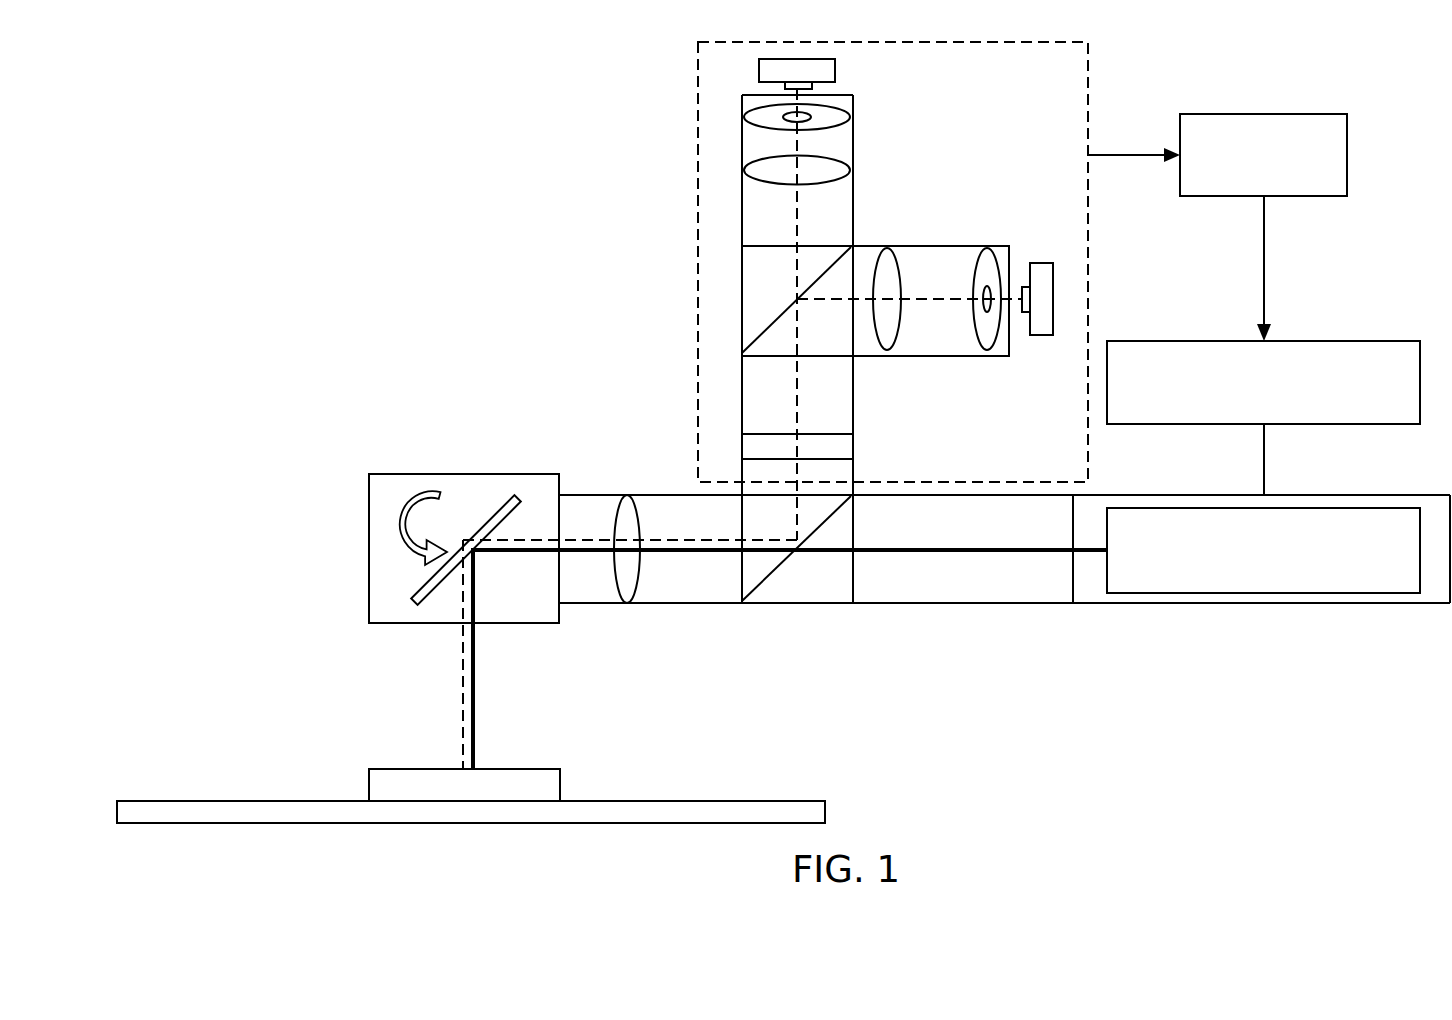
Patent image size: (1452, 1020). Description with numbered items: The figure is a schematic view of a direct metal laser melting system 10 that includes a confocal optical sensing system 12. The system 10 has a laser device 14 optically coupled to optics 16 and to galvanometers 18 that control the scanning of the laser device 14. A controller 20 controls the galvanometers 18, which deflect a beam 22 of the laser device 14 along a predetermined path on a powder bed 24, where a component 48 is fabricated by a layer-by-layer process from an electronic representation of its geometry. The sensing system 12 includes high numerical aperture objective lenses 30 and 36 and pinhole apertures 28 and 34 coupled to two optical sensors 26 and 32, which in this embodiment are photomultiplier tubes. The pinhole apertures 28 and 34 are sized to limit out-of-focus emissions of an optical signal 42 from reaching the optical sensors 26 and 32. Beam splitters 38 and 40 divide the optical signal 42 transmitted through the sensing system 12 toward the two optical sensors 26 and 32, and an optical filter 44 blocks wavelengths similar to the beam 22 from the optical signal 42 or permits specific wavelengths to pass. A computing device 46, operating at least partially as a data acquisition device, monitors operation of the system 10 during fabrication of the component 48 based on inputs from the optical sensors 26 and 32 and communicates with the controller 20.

The direct metal laser melting (DMLM) system 10 is at (436, 98).
The confocal optical sensing system 12 is at (690, 109).
The laser device 14 is at (1263, 594).
The optics 16 is at (627, 604).
The galvanometers 18 is at (500, 500).
The controller 20 is at (1331, 340).
The beam 22 is at (988, 552).
The powder bed 24 is at (721, 801).
The optical sensor 26 is at (835, 70).
The pinhole aperture 28 is at (852, 108).
The objective lens 30 is at (852, 162).
The optical sensor 32 is at (1040, 263).
The pinhole aperture 34 is at (985, 246).
The objective lens 36 is at (887, 246).
The beam splitter 38 is at (742, 299).
The beam splitter 40 is at (795, 604).
The optical signal 42 is at (797, 390).
The optical filter 44 is at (853, 445).
The computing device 46 is at (1292, 114).
The component 48 is at (518, 769).